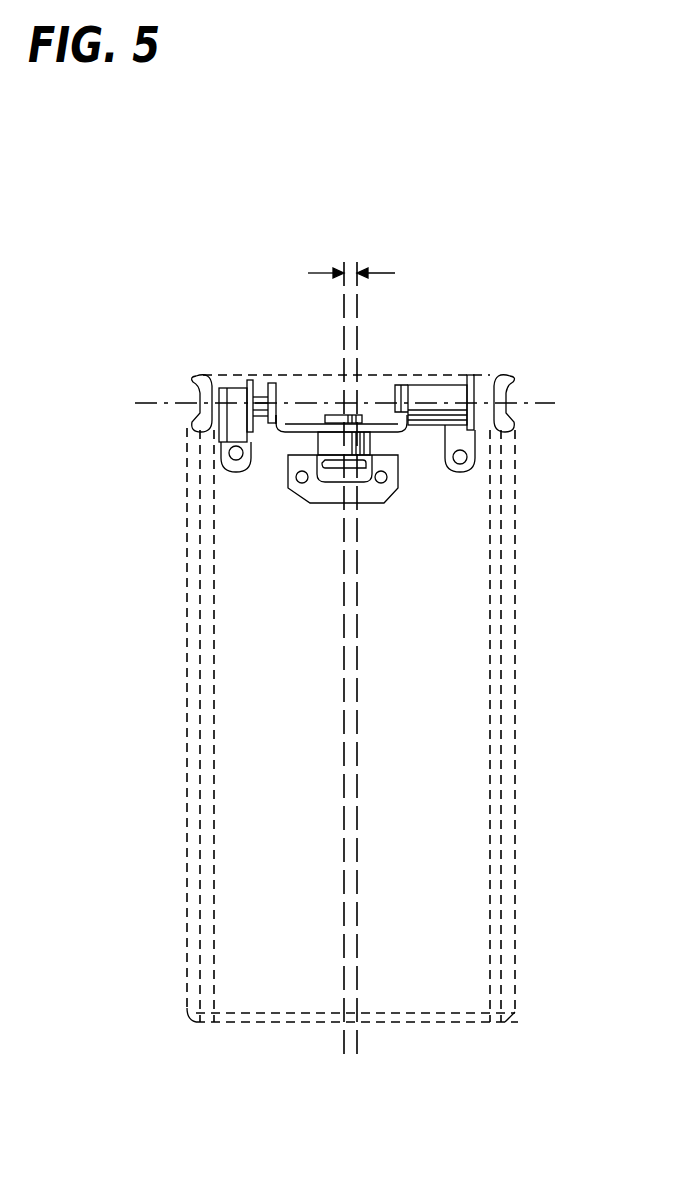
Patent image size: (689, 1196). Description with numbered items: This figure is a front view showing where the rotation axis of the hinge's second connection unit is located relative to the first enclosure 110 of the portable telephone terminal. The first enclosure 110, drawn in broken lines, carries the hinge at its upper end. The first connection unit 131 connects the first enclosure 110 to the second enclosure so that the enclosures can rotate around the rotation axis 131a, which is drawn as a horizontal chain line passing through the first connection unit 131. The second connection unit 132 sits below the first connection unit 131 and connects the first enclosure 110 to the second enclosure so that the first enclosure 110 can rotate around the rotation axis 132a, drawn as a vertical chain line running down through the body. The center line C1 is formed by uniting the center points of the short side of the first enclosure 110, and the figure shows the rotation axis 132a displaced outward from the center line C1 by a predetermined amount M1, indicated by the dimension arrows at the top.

The first enclosure 110 is at (248, 690).
The first connection unit 131 is at (255, 380).
The rotation axis 131a is at (146, 402).
The second connection unit 132 is at (378, 495).
The rotation axis 132a is at (344, 612).
The predetermined amount M1 is at (352, 268).
The center line C1 is at (357, 337).